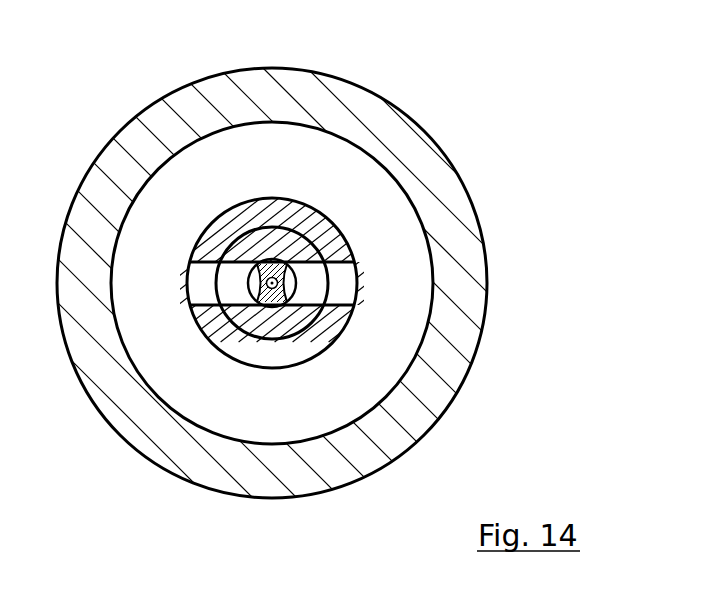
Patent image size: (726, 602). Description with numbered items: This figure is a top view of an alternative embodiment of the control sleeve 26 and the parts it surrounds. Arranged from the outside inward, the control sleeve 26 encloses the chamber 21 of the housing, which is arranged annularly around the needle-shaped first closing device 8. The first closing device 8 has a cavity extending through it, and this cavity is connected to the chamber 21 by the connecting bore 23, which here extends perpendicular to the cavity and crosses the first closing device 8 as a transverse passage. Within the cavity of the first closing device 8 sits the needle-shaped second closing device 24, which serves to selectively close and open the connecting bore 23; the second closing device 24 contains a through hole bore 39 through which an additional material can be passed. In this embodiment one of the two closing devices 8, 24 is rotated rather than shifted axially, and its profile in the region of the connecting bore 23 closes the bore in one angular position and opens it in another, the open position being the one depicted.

The first closing device 8 is at (233, 230).
The chamber 21 is at (325, 165).
The connecting bore 23 is at (317, 285).
The second closing device 24 is at (275, 262).
The control sleeve 26 is at (428, 212).
The through hole bore 39 is at (235, 350).